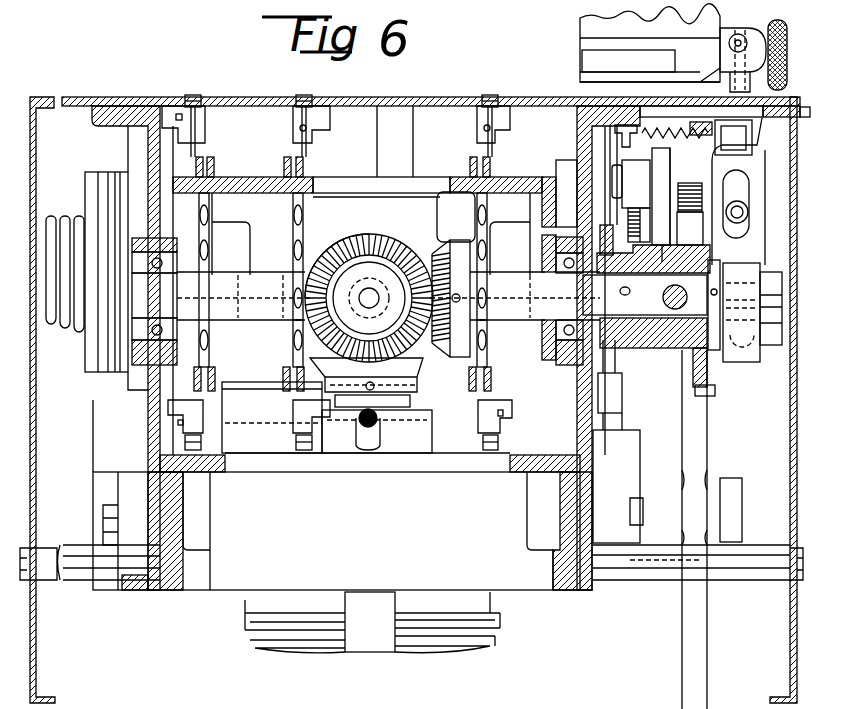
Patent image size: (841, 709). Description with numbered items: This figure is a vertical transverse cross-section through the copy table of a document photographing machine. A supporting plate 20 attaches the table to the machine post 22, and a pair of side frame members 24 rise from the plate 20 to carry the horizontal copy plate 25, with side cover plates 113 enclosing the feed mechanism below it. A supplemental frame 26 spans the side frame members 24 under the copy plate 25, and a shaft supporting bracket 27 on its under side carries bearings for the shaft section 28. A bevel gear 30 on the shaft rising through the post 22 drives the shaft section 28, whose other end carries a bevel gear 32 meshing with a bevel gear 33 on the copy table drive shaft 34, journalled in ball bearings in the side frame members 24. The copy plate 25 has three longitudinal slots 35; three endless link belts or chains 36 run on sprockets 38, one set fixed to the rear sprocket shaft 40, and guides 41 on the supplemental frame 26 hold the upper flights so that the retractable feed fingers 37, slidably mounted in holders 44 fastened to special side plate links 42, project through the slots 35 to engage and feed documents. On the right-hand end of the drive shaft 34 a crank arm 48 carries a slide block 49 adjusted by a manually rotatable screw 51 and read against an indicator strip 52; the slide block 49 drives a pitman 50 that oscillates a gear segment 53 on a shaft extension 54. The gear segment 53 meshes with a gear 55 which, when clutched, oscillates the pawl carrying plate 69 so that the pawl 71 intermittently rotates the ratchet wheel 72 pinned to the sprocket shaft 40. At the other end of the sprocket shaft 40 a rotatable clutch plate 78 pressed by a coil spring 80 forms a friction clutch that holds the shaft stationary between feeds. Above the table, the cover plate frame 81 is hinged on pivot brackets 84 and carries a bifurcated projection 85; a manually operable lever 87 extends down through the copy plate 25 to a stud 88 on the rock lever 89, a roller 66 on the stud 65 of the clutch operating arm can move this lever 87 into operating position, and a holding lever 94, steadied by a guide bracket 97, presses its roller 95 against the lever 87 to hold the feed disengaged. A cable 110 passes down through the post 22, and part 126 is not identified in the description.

The supporting plate 20 is at (468, 472).
The post 22 is at (500, 620).
The side frame members 24 is at (140, 170).
The copy plate 25 is at (78, 112).
The supplemental frame 26 is at (527, 178).
The shaft supporting bracket 27 is at (369, 288).
The shaft section 28 is at (386, 262).
The bevel gear 30 is at (418, 366).
The bevel gear 32 is at (330, 256).
The bevel gear 33 is at (432, 243).
The copy table drive shaft 34 is at (282, 322).
The longitudinally extending slots 35 is at (190, 95).
The endless link belts or chains 36 is at (210, 157).
The retractable feed fingers 37 is at (200, 95).
The sprockets 38 is at (293, 205).
The sprocket shaft 40 is at (270, 255).
The guides 41 is at (222, 177).
The side plate link 42 is at (199, 385).
The finger holder 44 is at (173, 143).
The crank arm 48 is at (678, 330).
The slide block 49 is at (690, 345).
The pitman 50 is at (737, 365).
The manually rotatable screw 51 is at (663, 293).
The indicator strip 52 is at (705, 392).
The gear segment 53 is at (704, 432).
The shaft extension 54 is at (742, 512).
The gear 55 is at (691, 183).
The stud 65 is at (727, 218).
The roller 66 is at (732, 250).
The pawl carrying plate 69 is at (656, 160).
The pawl 71 is at (631, 184).
The ratchet wheel 72 is at (640, 206).
The rotatable clutch plate 78 is at (95, 183).
The coil spring 80 is at (78, 225).
The cover plate frame 81 is at (650, 43).
The pivot brackets 84 is at (722, 28).
The bifurcated projection 85 is at (729, 46).
The manually operable lever 87 is at (757, 180).
The stud 88 is at (770, 348).
The rock lever 89 is at (622, 404).
The holding lever 94 is at (657, 108).
The roller 95 is at (733, 137).
The guide bracket 97 is at (785, 114).
The cable 110 is at (378, 440).
The side cover plates 113 is at (36, 428).
The coupling 126 is at (645, 295).